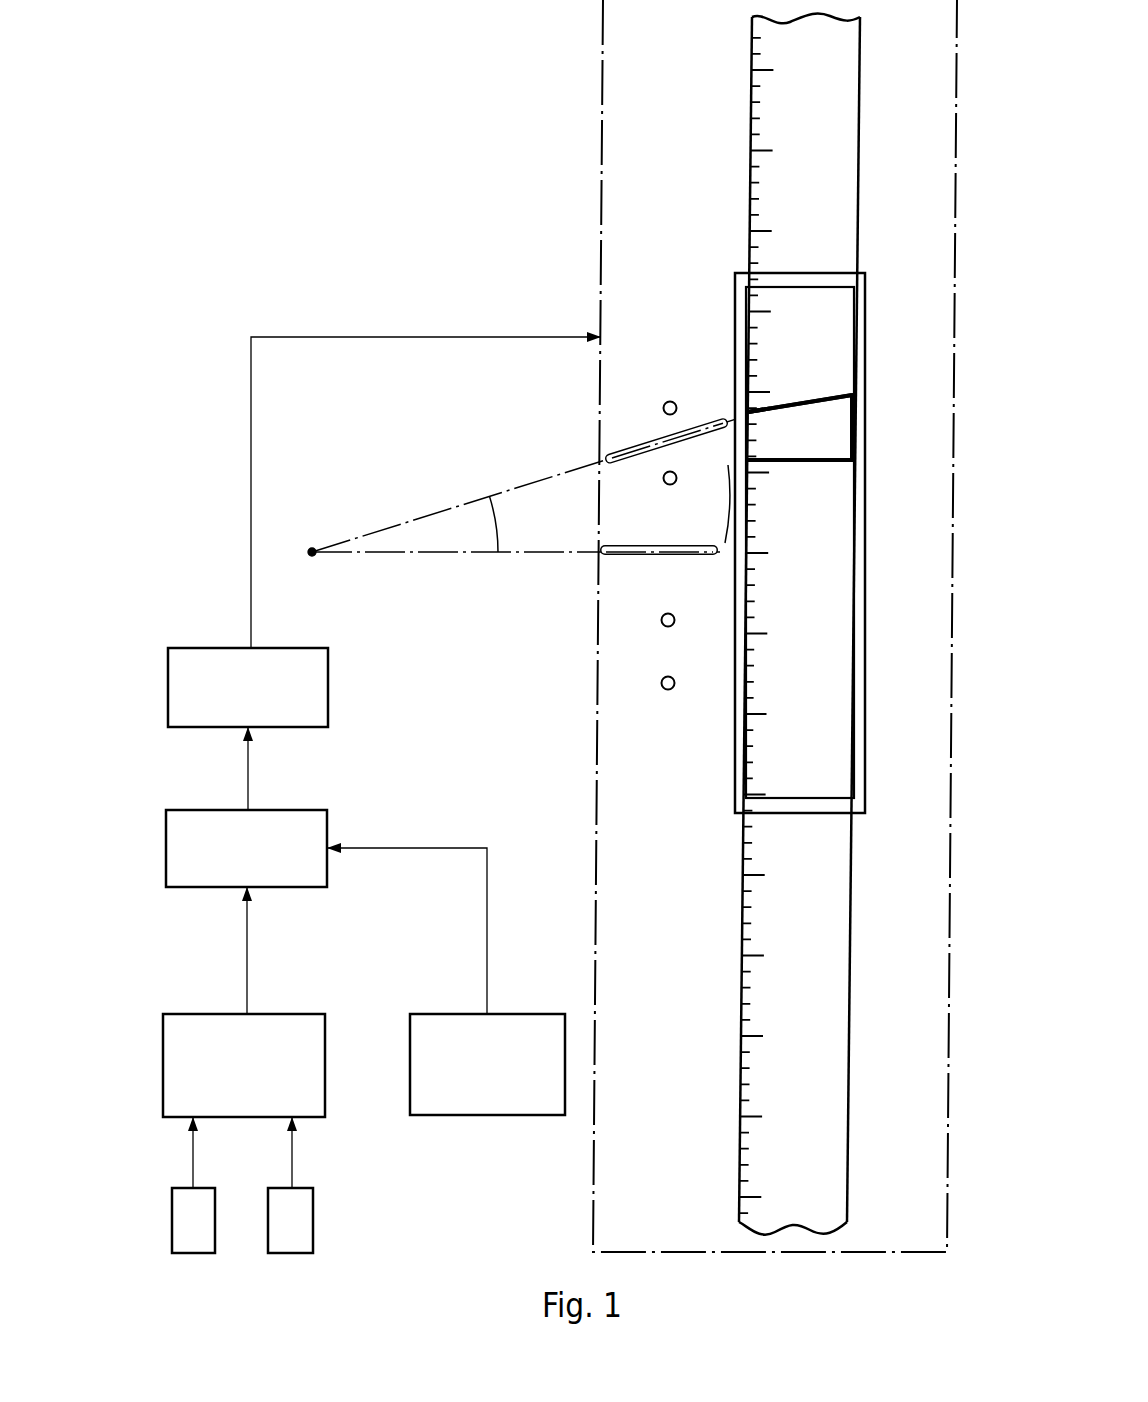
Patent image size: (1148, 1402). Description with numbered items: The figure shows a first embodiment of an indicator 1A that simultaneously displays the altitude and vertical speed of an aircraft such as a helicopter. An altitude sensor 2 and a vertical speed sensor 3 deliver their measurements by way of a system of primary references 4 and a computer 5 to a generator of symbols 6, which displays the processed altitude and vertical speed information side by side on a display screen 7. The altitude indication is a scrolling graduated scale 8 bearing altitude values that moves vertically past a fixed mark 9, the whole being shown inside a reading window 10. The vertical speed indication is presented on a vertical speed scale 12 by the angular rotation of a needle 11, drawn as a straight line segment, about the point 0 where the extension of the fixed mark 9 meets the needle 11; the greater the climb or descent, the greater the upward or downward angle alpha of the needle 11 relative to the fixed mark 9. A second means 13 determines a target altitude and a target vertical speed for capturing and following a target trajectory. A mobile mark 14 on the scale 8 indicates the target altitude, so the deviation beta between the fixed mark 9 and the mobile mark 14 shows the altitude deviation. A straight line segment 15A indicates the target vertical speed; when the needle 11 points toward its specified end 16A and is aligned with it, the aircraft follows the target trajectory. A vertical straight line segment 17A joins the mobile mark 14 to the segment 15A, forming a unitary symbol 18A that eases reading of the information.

The indicator 1A is at (498, 275).
The display screen 7 is at (601, 197).
The scrolling graduated scale 8 is at (827, 180).
The reading window 10 is at (867, 623).
The mobile mark 14 is at (812, 462).
The straight line segment 15A is at (817, 395).
The specified end 16A is at (737, 405).
The second vertical straight line segment 17A is at (853, 433).
The symbol 18A is at (857, 425).
The needle 11 is at (618, 456).
The fixed mark 9 is at (634, 557).
The vertical speed scale 12 is at (652, 688).
The point O 0 is at (312, 552).
The generator of symbols 6 is at (328, 684).
The computer 5 is at (327, 872).
The system of primary references 4 is at (325, 1098).
The second means for determining a target altitude and a target vertical speed 13 is at (493, 1115).
The altitude sensor 2 is at (188, 1257).
The vertical speed sensor 3 is at (287, 1257).